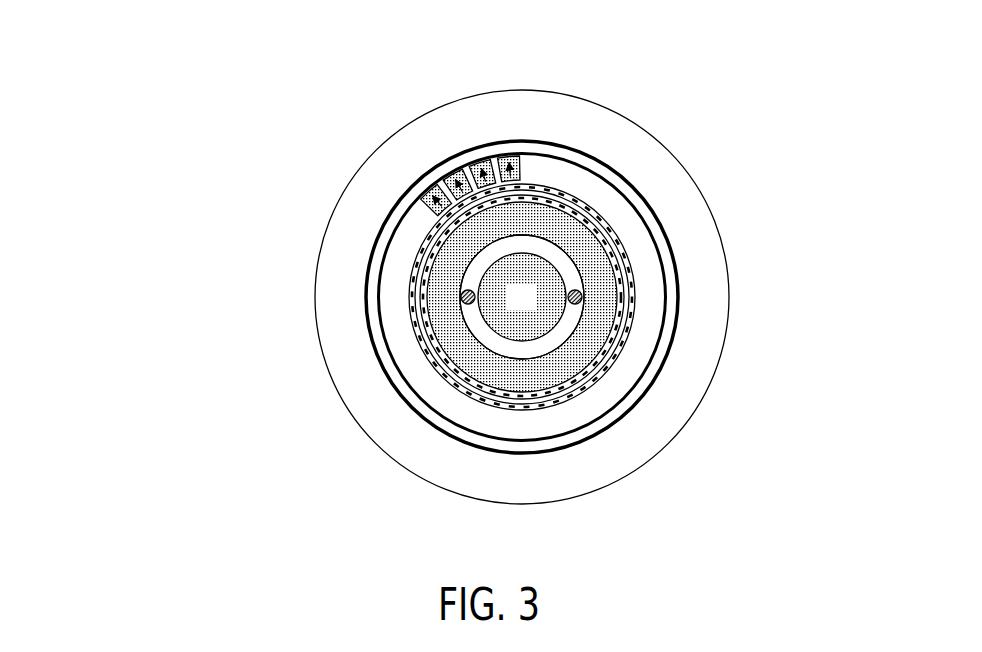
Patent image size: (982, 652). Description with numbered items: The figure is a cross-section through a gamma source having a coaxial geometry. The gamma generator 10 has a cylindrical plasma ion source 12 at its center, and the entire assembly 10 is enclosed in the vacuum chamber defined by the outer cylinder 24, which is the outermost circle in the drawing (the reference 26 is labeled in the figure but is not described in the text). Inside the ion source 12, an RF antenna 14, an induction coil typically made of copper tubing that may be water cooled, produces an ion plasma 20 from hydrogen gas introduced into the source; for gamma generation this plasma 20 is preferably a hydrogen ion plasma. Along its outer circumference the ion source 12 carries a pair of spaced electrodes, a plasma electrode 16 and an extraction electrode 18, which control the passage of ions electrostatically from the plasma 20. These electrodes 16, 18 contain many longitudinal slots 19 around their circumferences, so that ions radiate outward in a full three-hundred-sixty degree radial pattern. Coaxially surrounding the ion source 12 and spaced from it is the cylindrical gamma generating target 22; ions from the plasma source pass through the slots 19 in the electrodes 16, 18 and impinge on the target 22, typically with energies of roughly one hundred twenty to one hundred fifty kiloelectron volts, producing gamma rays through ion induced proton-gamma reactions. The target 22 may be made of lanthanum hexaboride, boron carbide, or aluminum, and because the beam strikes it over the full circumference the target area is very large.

The gamma generator 10 is at (583, 48).
The plasma ion source 12 is at (535, 307).
The RF antenna 14 is at (470, 258).
The plasma electrode 16 is at (625, 328).
The extraction electrode 18 is at (415, 331).
The slots 19 is at (569, 207).
The ion plasma 20 is at (560, 362).
The gamma generating target 22 is at (668, 262).
The outer cylinder 24 is at (643, 197).
The outer housing 26 is at (453, 101).